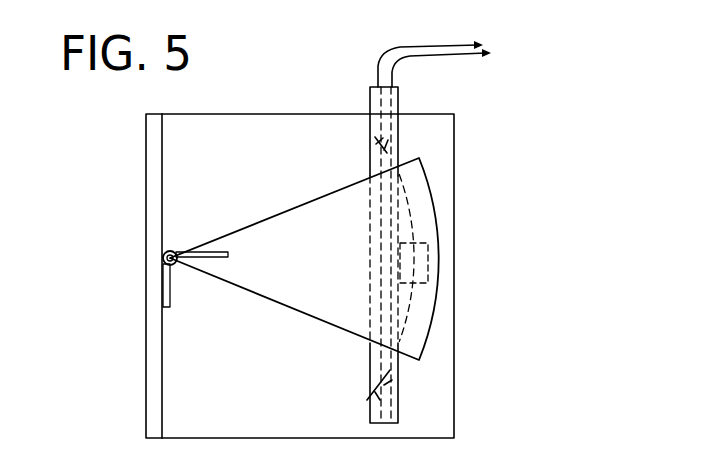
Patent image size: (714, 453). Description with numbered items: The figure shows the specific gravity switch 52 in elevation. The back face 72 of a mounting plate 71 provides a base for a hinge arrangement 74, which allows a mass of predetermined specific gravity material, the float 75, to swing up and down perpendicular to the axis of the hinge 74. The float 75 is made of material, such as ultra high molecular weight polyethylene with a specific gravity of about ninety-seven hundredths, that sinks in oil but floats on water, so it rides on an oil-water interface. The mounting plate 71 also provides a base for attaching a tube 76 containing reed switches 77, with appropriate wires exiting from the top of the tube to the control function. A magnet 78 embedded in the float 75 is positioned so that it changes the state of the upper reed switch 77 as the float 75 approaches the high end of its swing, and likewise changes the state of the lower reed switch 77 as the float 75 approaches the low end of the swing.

The specific gravity switch 52 is at (486, 166).
The mounting plate 71 is at (247, 122).
The back face 72 is at (145, 202).
The hinge arrangement 74 is at (169, 251).
The float 75 is at (433, 215).
The cable guide 76 is at (398, 97).
The reed switch 77 is at (372, 163).
The magnet 78 is at (440, 265).